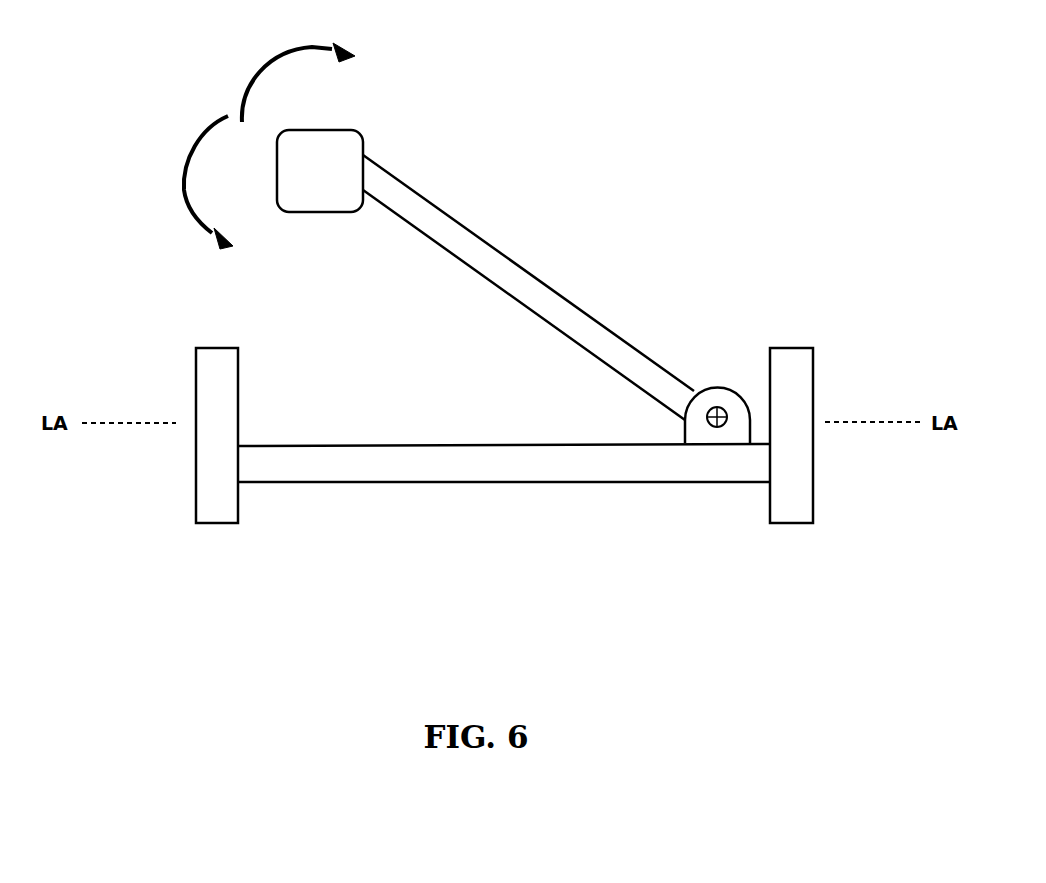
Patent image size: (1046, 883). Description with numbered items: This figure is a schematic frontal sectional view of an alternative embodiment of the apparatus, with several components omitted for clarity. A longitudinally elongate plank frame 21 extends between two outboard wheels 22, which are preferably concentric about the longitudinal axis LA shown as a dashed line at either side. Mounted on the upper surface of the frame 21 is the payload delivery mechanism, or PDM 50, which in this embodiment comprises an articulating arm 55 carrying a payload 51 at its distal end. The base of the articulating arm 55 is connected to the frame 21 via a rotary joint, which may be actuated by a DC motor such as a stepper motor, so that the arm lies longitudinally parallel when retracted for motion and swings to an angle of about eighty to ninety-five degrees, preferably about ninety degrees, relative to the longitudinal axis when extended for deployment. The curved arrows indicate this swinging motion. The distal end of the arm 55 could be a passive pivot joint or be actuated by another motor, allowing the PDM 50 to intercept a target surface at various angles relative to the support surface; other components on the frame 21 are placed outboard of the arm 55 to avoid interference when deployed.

The plank frame 21 is at (480, 463).
The outboard wheels 22 is at (215, 358).
The payload delivery mechanism 50 is at (546, 286).
The payload 51 is at (327, 197).
The articulating arm 55 is at (510, 270).